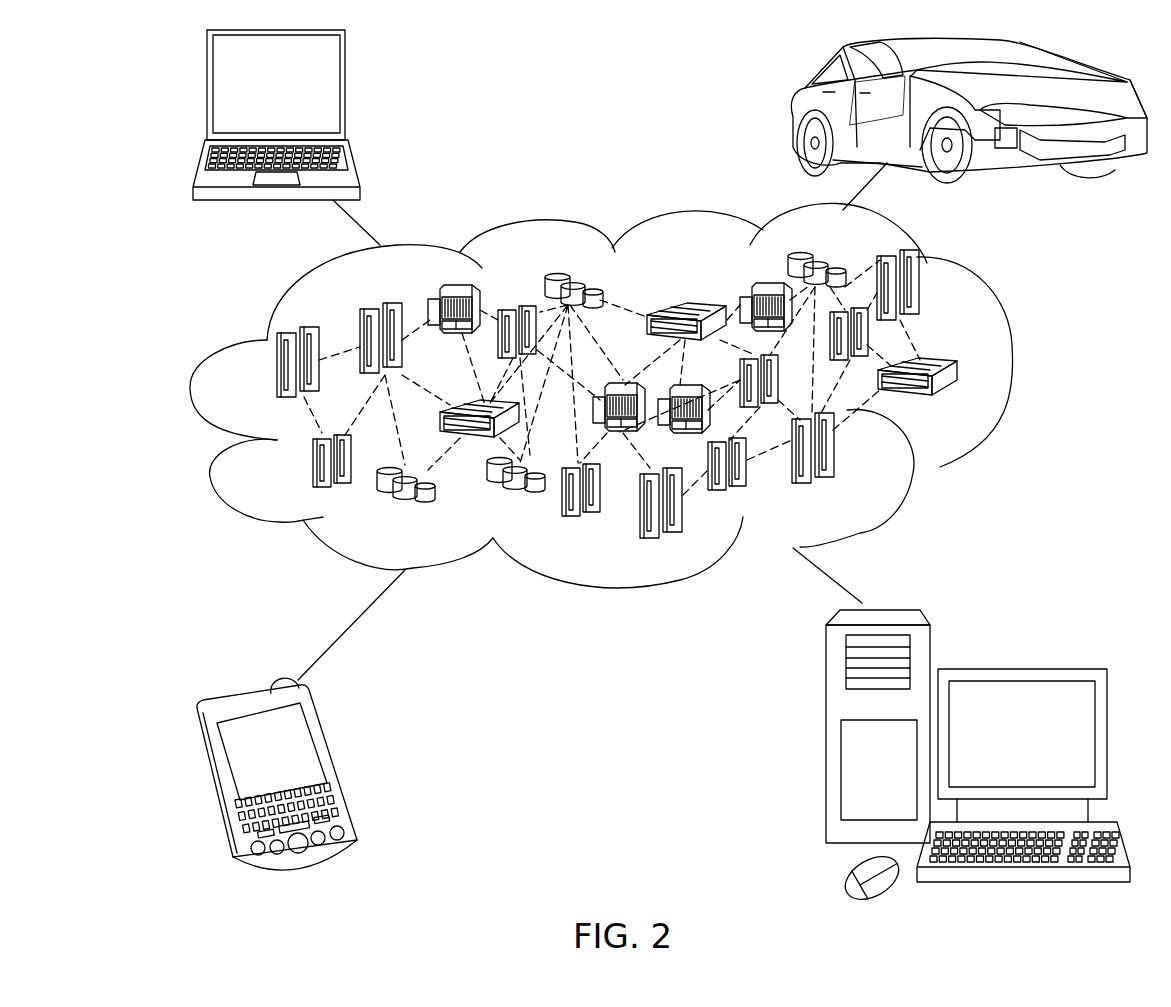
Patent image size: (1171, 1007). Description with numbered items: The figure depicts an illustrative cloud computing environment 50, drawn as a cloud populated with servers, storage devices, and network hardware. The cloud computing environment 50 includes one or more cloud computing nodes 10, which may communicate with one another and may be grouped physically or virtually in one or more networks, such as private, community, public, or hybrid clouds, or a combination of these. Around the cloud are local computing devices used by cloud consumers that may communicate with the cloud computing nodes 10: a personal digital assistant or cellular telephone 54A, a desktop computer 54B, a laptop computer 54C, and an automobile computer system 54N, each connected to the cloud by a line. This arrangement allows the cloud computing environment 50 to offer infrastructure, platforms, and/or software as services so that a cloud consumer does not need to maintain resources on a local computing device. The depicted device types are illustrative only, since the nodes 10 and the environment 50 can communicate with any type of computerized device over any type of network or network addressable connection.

The cloud computing environment 50 is at (1018, 372).
The cloud computing node 10 is at (963, 405).
The personal digital assistant or cellular telephone 54A is at (337, 765).
The desktop computer 54B is at (1020, 668).
The laptop computer 54C is at (345, 92).
The automobile computer system 54N is at (795, 110).